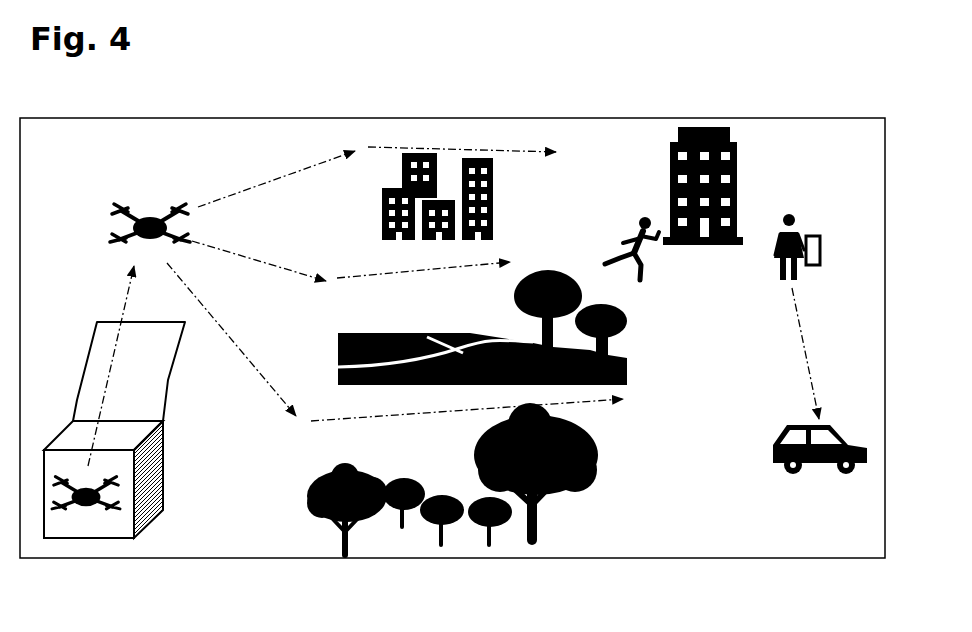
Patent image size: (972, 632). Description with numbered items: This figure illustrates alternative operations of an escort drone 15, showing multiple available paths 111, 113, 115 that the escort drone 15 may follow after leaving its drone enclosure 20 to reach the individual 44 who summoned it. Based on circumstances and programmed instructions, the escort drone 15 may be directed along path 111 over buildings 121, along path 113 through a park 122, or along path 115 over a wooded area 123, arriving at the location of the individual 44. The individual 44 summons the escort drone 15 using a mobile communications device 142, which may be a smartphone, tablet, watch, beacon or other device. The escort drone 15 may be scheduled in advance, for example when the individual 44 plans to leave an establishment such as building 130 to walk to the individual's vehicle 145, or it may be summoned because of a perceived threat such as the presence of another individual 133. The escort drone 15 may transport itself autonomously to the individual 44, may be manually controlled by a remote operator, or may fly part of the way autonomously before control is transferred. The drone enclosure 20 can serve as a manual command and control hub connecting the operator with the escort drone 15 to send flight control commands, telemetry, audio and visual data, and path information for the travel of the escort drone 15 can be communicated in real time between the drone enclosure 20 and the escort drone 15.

The escort drone 15 is at (211, 484).
The drone enclosure 20 is at (105, 531).
The path 111 is at (331, 151).
The path 113 is at (266, 248).
The path 115 is at (207, 298).
The buildings 121 is at (500, 209).
The park 122 is at (634, 322).
The wooded area 123 is at (617, 479).
The building 130 is at (741, 131).
The another individual 133 is at (627, 212).
The individual 44 is at (807, 218).
The mobile communications device 142 is at (829, 227).
The vehicle 145 is at (838, 422).